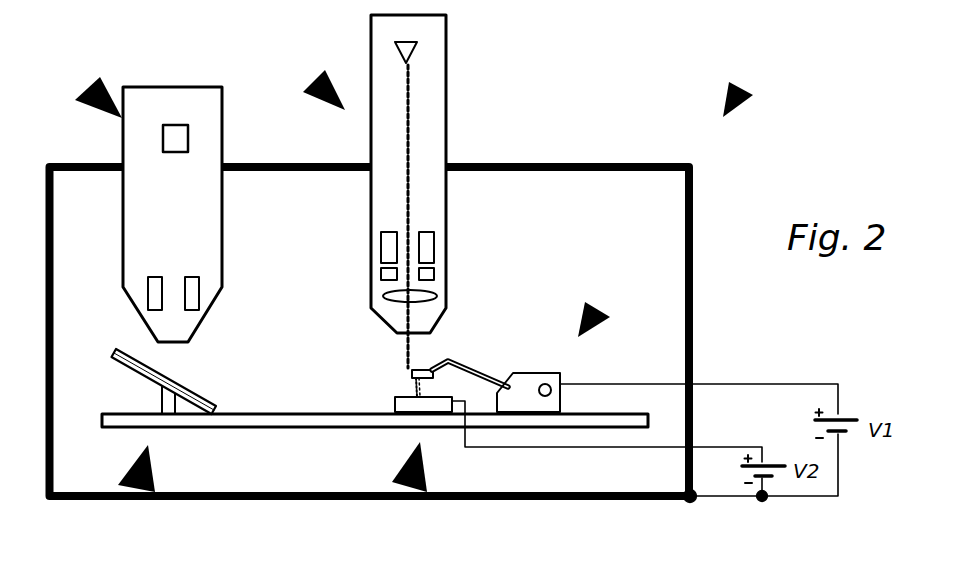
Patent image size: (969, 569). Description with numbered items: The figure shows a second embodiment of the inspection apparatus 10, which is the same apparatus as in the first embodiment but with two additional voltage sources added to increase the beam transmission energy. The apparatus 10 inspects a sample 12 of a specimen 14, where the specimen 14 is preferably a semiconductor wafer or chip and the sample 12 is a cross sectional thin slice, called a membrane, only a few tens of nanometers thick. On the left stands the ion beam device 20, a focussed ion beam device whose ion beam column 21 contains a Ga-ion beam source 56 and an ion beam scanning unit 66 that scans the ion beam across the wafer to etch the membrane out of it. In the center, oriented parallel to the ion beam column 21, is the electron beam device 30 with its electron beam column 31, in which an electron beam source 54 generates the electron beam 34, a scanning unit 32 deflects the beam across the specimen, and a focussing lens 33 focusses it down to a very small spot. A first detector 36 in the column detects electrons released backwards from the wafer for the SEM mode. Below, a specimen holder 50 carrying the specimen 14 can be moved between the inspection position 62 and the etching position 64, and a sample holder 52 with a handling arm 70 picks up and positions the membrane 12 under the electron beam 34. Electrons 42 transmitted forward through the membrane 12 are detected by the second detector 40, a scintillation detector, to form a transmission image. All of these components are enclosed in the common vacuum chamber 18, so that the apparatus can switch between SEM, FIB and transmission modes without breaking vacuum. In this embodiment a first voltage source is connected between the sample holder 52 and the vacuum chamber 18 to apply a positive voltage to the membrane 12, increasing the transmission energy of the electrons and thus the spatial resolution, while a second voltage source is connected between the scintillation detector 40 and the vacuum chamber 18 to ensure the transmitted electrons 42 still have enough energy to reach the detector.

The apparatus 10 is at (745, 93).
The sample 12 is at (429, 369).
The specimen 14 is at (213, 386).
The vacuum chamber 18 is at (590, 163).
The ion beam device 20 is at (96, 77).
The ion beam column 21 is at (223, 139).
The electron beam device 30 is at (325, 70).
The electron beam column 31 is at (446, 97).
The scanning unit 32 is at (434, 245).
The focussing lens 33 is at (438, 296).
The electron beam 34 is at (410, 130).
The first detector 36 is at (434, 273).
The second detector 40 is at (395, 405).
The transmitted electrons 42 is at (412, 376).
The specimen holder 50 is at (162, 386).
The sample holder 52 is at (605, 312).
The electron beam source 54 is at (417, 44).
The Ga-ion beam source 56 is at (181, 124).
The inspection position 62 is at (420, 500).
The etching position 64 is at (140, 500).
The ion beam scanning unit 66 is at (199, 288).
The handling arm 70 is at (480, 369).